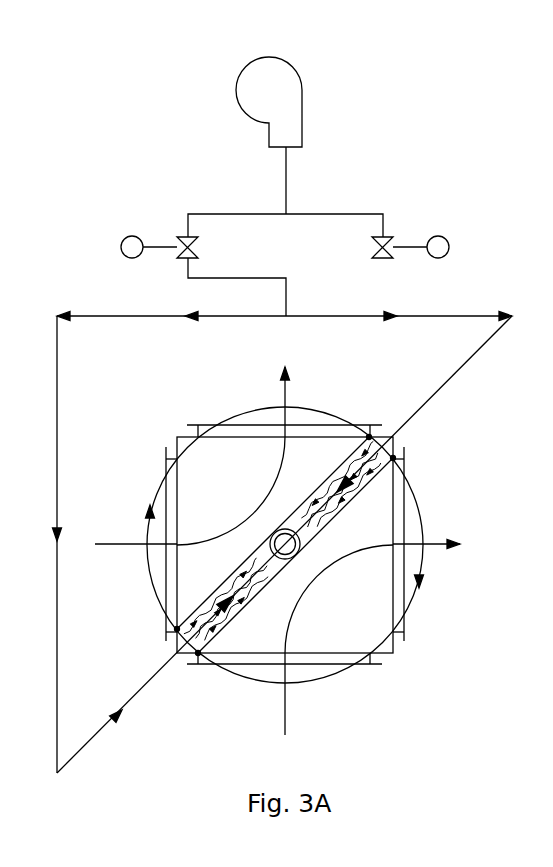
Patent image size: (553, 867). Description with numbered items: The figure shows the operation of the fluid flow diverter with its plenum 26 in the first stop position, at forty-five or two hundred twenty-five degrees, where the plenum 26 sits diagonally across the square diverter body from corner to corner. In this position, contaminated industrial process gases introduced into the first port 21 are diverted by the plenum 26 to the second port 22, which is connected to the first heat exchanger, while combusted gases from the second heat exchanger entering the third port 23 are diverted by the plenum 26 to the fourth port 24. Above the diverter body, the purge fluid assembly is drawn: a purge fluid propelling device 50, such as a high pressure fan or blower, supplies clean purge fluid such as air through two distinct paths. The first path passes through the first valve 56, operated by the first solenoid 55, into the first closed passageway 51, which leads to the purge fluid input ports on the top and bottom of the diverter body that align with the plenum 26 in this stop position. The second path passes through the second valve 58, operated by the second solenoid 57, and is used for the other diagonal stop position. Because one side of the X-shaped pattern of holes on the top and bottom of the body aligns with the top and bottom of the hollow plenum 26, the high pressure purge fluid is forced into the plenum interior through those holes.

The first port 21 is at (277, 551).
The second port 22 is at (381, 599).
The third port 23 is at (291, 528).
The fourth port 24 is at (180, 540).
The plenum 26 is at (190, 512).
The purge fluid propelling device 50 is at (292, 98).
The first closed passageway 51 is at (277, 460).
The first solenoid 55 is at (124, 241).
The first valve 56 is at (157, 228).
The second solenoid 57 is at (469, 234).
The second valve 58 is at (407, 229).